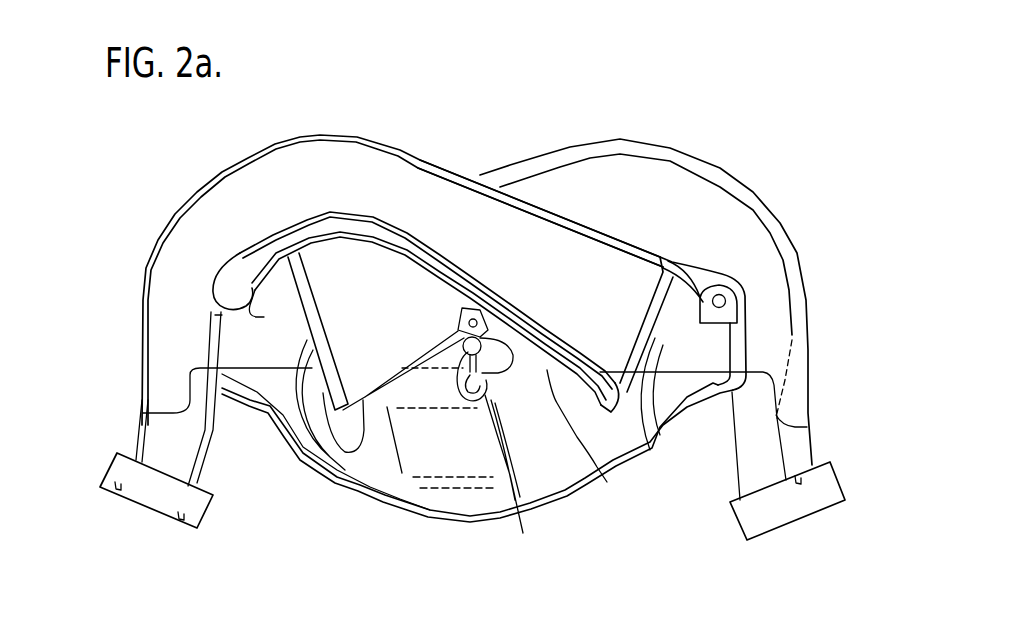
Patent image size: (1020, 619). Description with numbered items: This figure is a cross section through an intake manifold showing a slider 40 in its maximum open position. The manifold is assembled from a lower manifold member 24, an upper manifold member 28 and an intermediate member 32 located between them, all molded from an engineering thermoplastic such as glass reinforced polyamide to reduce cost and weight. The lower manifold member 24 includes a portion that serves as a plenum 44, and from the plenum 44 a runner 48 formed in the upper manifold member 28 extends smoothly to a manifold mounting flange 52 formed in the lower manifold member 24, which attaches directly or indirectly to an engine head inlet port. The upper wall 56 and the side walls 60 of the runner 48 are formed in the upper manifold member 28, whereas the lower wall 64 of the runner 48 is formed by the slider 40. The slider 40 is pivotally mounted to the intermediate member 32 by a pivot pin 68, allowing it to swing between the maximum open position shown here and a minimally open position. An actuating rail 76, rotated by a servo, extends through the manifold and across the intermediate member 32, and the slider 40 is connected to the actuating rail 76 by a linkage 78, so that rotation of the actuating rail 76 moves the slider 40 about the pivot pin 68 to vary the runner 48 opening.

The lower manifold member 24 is at (623, 463).
The upper manifold member 28 is at (340, 135).
The intermediate member 32 is at (380, 327).
The slider 40 is at (607, 483).
The plenum 44 is at (453, 467).
The runner 48 is at (325, 187).
The manifold mounting flange 52 is at (150, 490).
The upper wall 56 is at (542, 213).
The side wall 60 is at (570, 253).
The lower wall 64 is at (520, 310).
The pivot pin 68 is at (217, 297).
The actuating rail 76 is at (353, 483).
The linkage 78 is at (523, 533).